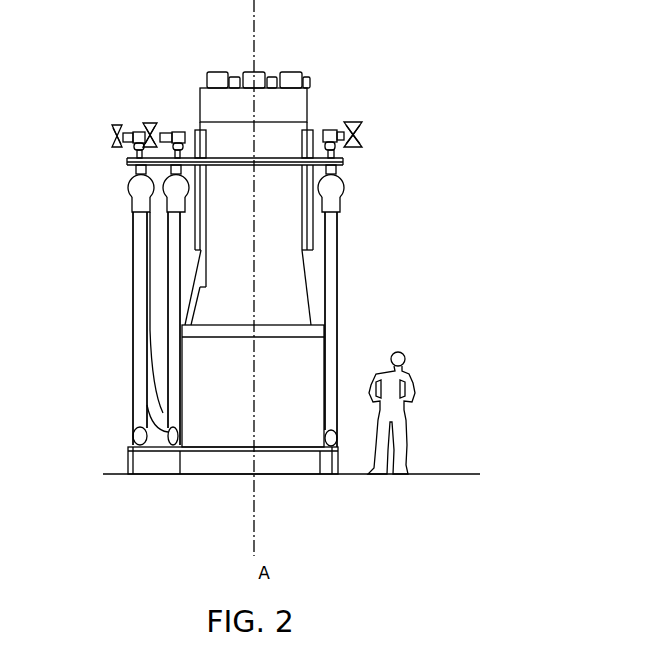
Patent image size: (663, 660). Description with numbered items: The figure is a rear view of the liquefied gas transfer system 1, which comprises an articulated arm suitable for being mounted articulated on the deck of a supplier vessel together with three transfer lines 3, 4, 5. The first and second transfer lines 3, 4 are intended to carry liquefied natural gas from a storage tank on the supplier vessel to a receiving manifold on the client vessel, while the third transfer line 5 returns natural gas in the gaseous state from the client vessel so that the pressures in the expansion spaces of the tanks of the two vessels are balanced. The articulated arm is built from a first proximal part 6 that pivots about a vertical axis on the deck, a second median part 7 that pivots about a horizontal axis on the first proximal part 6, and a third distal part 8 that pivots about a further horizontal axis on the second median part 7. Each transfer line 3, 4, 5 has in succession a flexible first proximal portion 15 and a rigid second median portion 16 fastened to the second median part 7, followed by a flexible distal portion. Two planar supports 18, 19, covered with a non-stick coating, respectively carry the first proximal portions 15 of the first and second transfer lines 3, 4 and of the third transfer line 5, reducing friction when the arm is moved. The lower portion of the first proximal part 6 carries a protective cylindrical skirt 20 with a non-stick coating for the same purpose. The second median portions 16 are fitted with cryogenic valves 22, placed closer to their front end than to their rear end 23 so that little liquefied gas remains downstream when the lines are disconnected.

The transfer system 1 is at (473, 130).
The first transfer line 3 is at (133, 202).
The second transfer line 4 is at (170, 203).
The third transfer line 5 is at (333, 208).
The first proximal part 6 is at (287, 280).
The second median part 7 is at (287, 132).
The third distal part 8 is at (290, 98).
The flexible first proximal portion 15 is at (177, 290).
The rigid second median portion 16 is at (130, 180).
The planar support 18 is at (160, 450).
The planar support 19 is at (333, 470).
The protective cylindrical skirt 20 is at (207, 452).
The cryogenic valve 22 is at (172, 138).
The rear end 23 is at (177, 188).